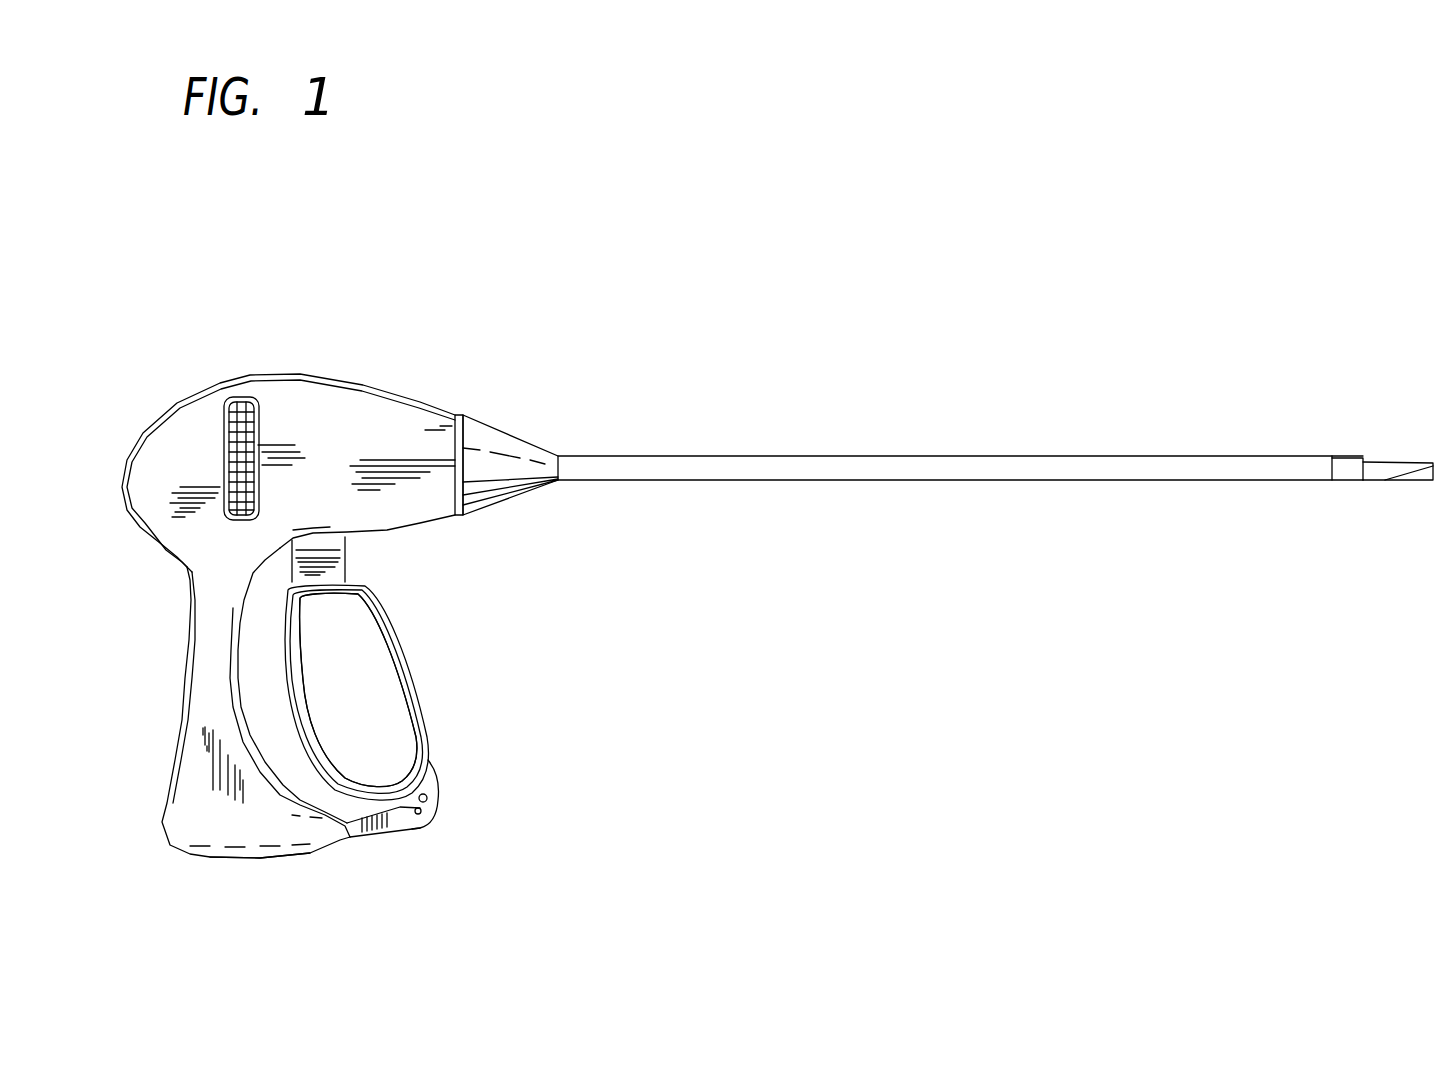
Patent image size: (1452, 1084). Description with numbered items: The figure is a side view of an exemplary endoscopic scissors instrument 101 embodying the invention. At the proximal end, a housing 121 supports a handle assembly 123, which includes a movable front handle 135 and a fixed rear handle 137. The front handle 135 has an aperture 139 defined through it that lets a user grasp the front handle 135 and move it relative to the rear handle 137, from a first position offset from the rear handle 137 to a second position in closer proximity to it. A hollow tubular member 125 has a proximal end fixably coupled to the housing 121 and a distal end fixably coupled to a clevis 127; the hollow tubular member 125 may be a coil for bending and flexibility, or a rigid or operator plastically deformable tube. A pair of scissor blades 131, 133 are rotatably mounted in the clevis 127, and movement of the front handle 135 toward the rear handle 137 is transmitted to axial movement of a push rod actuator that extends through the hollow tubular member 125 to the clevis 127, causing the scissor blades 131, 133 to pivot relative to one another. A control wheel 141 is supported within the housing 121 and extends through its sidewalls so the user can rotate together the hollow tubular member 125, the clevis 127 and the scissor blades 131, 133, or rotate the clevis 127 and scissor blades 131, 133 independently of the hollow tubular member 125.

The endoscopic scissors instrument 101 is at (665, 382).
The housing 121 is at (348, 407).
The handle assembly 123 is at (297, 843).
The hollow tubular member 125 is at (873, 453).
The clevis 127 is at (1350, 482).
The scissor blade 131 is at (1397, 463).
The scissor blade 133 is at (1423, 482).
The front handle 135 is at (408, 670).
The rear handle 137 is at (203, 658).
The aperture 139 is at (350, 632).
The control wheel 141 is at (248, 397).